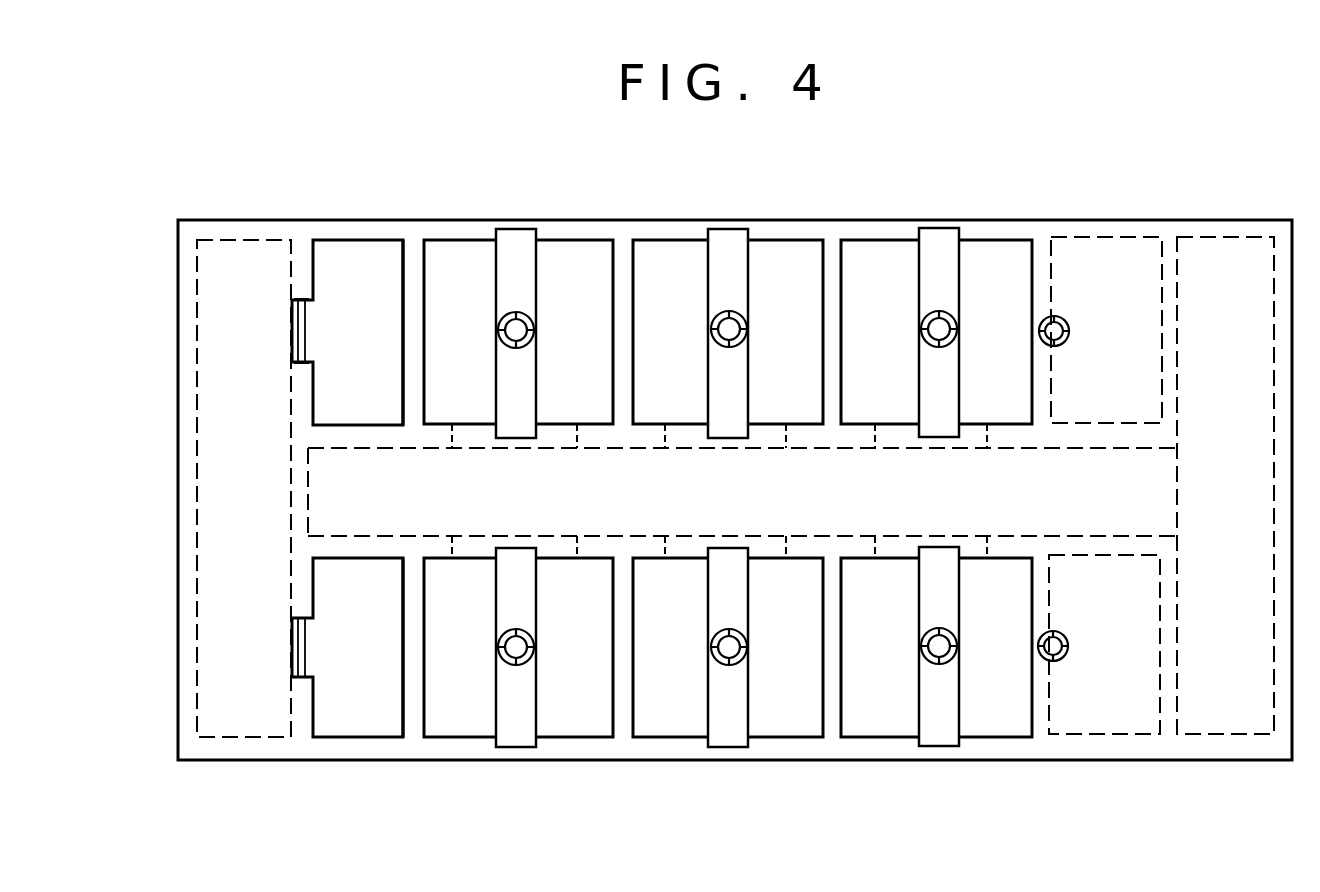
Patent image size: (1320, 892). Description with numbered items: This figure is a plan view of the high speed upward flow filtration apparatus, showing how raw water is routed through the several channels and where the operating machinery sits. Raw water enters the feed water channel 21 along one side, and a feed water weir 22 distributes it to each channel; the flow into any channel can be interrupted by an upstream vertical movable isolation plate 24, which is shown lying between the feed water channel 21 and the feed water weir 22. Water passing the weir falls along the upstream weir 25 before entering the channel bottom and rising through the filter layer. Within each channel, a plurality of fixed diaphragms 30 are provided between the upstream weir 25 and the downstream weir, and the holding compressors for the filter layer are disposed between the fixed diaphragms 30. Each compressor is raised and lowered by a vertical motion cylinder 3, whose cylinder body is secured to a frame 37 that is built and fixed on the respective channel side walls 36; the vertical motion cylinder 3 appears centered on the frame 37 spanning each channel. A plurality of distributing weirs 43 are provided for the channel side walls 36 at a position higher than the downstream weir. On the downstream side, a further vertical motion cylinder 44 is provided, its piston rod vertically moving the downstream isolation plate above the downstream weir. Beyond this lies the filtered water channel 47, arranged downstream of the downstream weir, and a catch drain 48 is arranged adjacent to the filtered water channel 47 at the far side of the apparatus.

The vertical motion cylinder 3 is at (502, 346).
The feed water channel 21 is at (221, 250).
The feed water weir 22 is at (340, 240).
The upstream vertical movable isolation plate 24 is at (297, 341).
The upstream weir 25 is at (411, 310).
The fixed diaphragm 30 is at (622, 298).
The channel side wall 36 is at (469, 222).
The frame 37 is at (515, 400).
The distributing weir 43 is at (693, 433).
The vertical motion cylinder 44 is at (1066, 650).
The filtered water channel 47 is at (1082, 714).
The catch drain 48 is at (1228, 714).